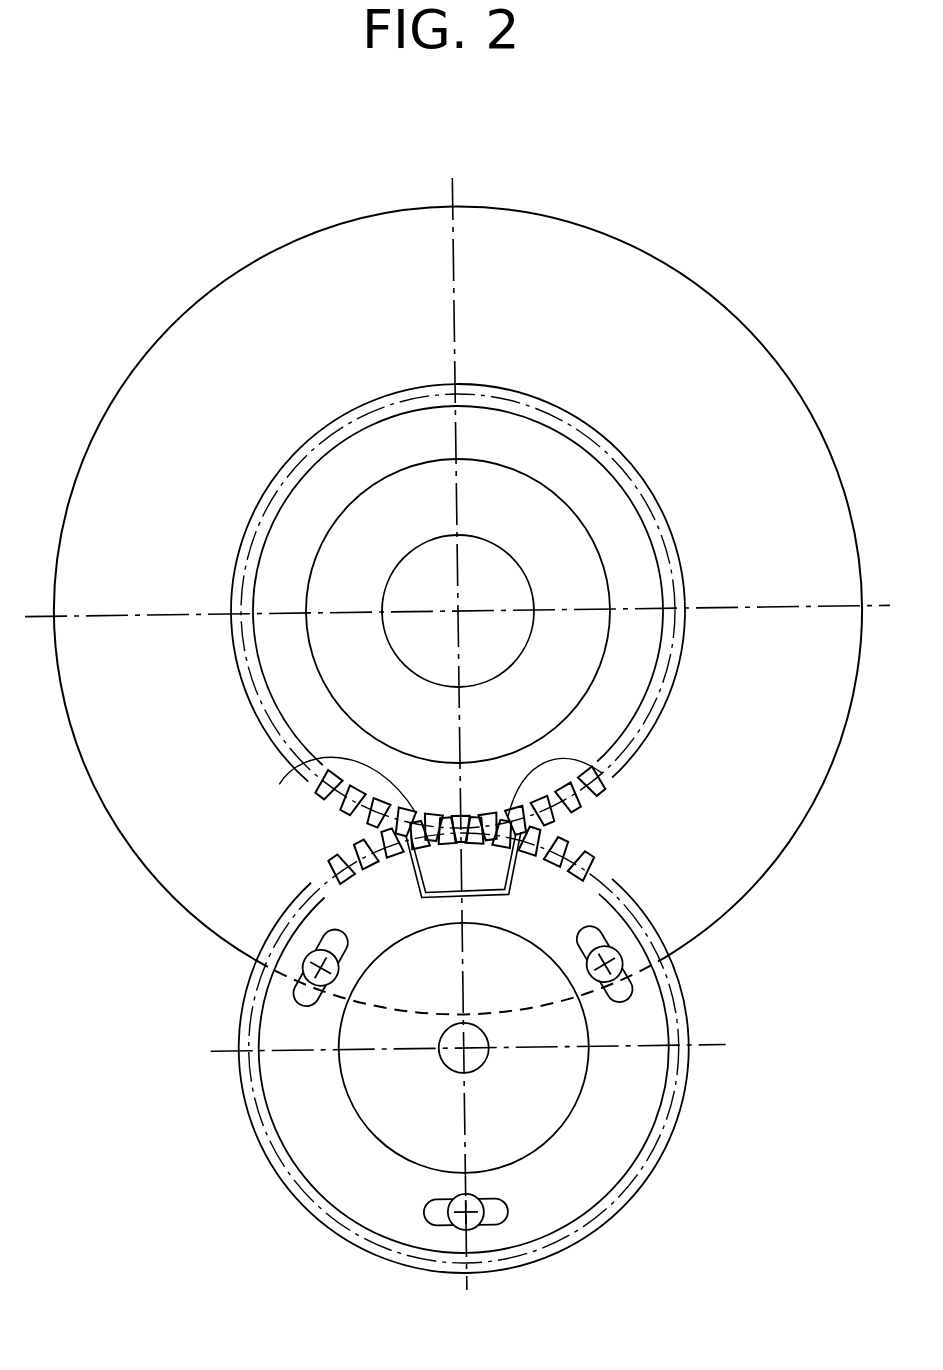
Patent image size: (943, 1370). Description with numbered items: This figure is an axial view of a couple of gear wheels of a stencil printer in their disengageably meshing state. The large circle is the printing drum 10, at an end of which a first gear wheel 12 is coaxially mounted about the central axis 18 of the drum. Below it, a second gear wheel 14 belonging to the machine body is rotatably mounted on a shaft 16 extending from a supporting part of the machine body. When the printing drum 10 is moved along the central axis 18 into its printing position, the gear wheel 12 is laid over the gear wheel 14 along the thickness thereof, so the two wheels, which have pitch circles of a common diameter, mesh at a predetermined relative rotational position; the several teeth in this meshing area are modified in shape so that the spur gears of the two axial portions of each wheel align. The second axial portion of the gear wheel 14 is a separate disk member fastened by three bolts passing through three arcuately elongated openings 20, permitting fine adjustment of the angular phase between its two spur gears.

The printing drum 10 is at (680, 268).
The first gear wheel 12 is at (686, 542).
The second gear wheel 14 is at (690, 1140).
The shaft 16 is at (482, 1062).
The central axis 18 is at (460, 610).
The arcuately elongated opening 20 is at (300, 1001).